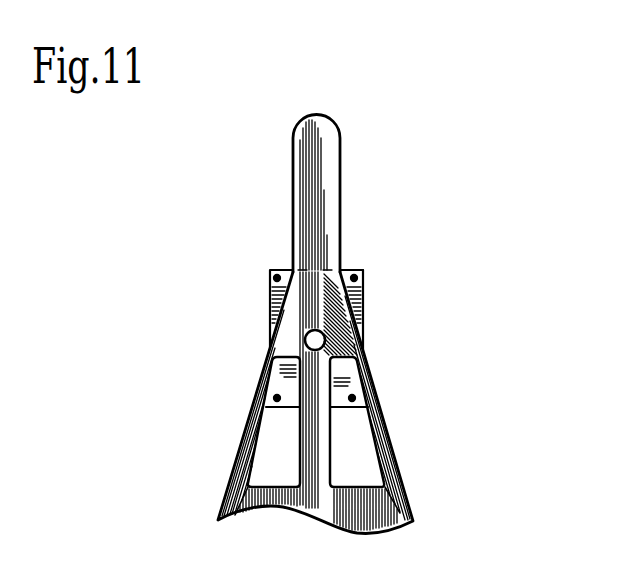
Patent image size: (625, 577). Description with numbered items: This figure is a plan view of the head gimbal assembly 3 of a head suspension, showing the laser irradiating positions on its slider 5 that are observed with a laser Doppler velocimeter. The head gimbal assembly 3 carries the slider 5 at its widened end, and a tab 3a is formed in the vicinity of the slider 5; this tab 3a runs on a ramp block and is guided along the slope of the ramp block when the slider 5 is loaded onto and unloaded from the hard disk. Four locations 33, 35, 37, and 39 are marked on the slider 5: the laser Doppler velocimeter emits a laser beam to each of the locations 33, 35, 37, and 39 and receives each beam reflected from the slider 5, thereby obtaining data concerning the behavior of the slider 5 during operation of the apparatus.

The head gimbal assembly 3 is at (408, 449).
The tab 3a is at (340, 175).
The slider 5 is at (364, 295).
The location 33 is at (272, 270).
The location 35 is at (354, 276).
The location 37 is at (273, 399).
The location 39 is at (355, 400).